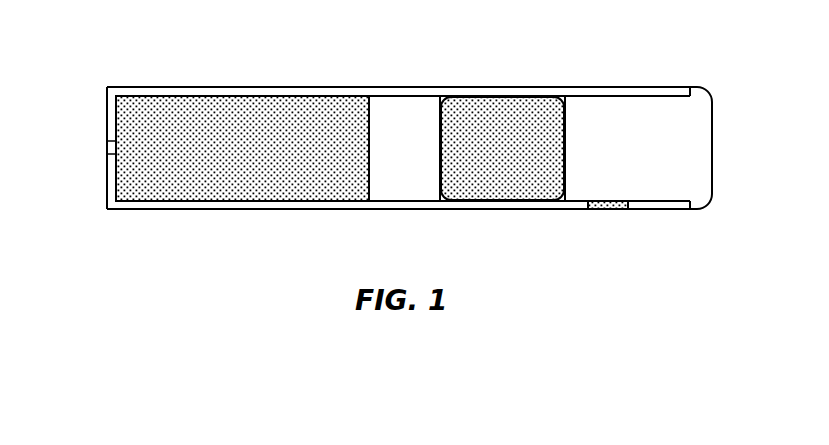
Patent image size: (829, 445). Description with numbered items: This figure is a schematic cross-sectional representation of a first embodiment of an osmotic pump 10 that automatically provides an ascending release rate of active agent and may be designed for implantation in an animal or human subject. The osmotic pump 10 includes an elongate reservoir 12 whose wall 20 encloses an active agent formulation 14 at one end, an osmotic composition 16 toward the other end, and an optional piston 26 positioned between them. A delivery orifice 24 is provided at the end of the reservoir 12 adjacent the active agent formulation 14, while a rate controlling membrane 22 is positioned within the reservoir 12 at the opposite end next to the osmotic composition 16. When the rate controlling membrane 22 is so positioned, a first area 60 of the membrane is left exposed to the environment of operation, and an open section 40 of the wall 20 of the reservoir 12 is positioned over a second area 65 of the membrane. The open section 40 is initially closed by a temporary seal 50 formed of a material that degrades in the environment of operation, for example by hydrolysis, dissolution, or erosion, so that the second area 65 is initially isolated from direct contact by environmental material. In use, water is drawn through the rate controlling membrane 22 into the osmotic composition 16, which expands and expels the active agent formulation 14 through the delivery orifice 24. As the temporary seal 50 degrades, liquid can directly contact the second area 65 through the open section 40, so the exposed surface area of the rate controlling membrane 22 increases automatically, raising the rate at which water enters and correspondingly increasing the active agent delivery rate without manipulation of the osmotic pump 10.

The osmotic pump 10 is at (651, 40).
The reservoir 12 is at (229, 88).
The active agent formulation 14 is at (203, 186).
The osmotic composition 16 is at (507, 108).
The wall 20 is at (108, 183).
The rate controlling membrane 22 is at (692, 172).
The delivery orifice 24 is at (116, 145).
The piston 26 is at (396, 188).
The open section 40 is at (588, 228).
The temporary seal 50 is at (606, 209).
The first area 60 is at (713, 125).
The second area 65 is at (610, 188).